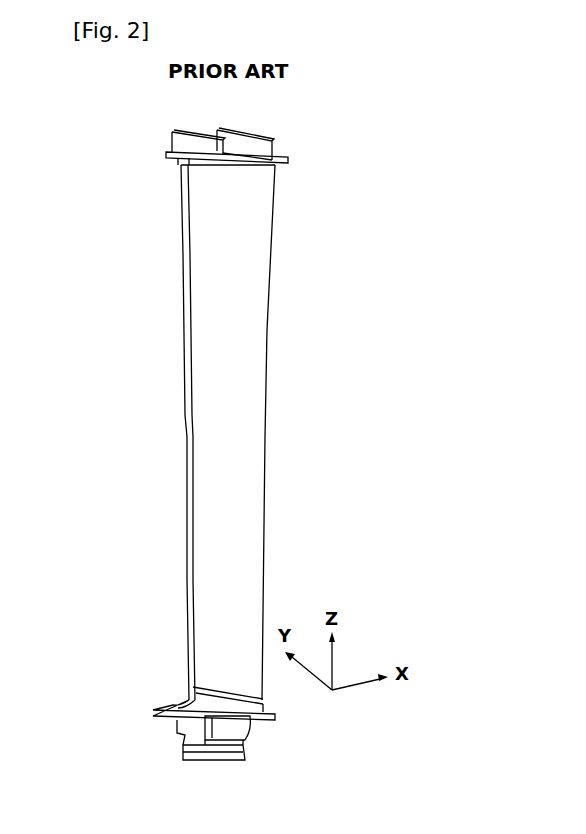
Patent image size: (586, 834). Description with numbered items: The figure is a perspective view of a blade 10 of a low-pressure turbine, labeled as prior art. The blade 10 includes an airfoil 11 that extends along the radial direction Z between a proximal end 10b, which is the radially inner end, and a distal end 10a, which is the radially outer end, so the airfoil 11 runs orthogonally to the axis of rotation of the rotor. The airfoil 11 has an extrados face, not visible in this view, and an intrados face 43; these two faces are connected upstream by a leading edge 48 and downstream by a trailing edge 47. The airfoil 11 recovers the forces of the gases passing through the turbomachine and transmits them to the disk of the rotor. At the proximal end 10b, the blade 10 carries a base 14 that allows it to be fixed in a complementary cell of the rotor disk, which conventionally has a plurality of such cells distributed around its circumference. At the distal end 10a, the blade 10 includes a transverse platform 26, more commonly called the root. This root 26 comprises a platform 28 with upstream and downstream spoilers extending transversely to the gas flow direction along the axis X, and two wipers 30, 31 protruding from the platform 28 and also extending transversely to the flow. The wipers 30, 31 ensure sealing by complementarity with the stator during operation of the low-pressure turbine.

The blade 10 is at (165, 331).
The distal end 10a is at (155, 162).
The proximal end 10b is at (154, 677).
The airfoil 11 is at (220, 247).
The base 14 is at (233, 762).
The transverse platform (root) 26 is at (293, 146).
The platform 28 is at (284, 157).
The wiper 30 is at (190, 132).
The wiper 31 is at (238, 129).
The intrados face 43 is at (228, 467).
The trailing edge 47 is at (270, 363).
The leading edge 48 is at (185, 383).